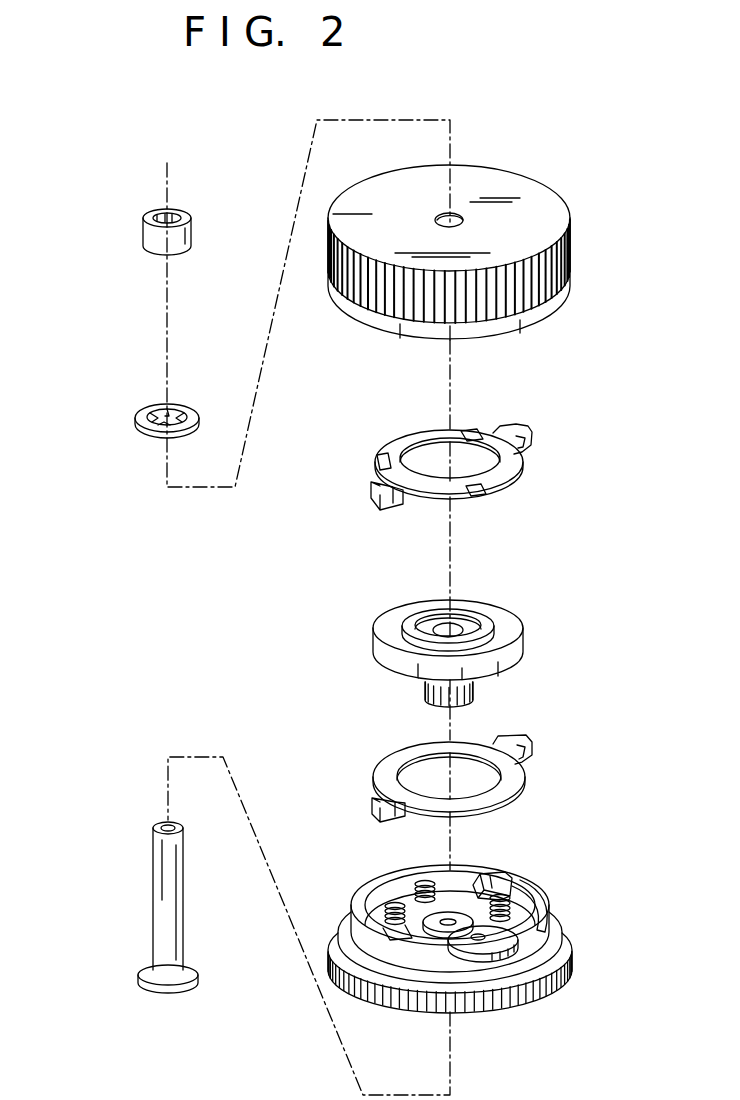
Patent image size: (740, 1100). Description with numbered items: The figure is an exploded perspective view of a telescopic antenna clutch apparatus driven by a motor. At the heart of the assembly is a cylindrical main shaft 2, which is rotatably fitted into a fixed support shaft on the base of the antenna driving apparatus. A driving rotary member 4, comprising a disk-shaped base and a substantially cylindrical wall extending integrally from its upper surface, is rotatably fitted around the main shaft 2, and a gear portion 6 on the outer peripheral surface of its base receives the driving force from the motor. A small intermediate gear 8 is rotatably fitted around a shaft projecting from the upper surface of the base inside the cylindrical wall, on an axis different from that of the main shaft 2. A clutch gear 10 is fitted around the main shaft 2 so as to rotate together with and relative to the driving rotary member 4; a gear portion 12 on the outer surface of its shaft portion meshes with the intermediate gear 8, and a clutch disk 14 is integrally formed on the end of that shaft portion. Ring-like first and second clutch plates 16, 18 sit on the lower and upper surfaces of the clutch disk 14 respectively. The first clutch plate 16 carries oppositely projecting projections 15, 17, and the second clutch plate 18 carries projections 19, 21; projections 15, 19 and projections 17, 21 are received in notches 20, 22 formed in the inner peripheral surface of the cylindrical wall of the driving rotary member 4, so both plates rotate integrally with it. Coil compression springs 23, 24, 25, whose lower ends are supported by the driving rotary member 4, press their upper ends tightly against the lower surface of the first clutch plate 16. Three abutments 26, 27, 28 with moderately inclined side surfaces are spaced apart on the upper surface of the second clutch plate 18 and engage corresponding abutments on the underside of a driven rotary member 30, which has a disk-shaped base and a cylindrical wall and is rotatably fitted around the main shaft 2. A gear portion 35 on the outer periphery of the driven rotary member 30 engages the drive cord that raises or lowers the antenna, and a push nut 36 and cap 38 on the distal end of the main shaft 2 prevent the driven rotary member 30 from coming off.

The main shaft 2 is at (153, 880).
The driving rotary member 4 is at (427, 940).
The gear portion 6 is at (397, 1000).
The intermediate gear 8 is at (500, 960).
The clutch gear 10 is at (443, 650).
The gear portion 12 is at (475, 690).
The clutch disk 14 is at (515, 636).
The projection 15 is at (370, 805).
The first clutch plate 16 is at (438, 772).
The projection 17 is at (522, 745).
The second clutch plate 18 is at (441, 455).
The projection 19 is at (375, 500).
The notch 20 is at (360, 928).
The projection 21 is at (510, 430).
The notch 22 is at (512, 880).
The coil compression spring 23 is at (386, 906).
The coil compression spring 24 is at (424, 883).
The coil compression spring 25 is at (540, 905).
The abutment 26 is at (375, 462).
The abutment 27 is at (480, 497).
The abutment 28 is at (470, 430).
The driven rotary member 30 is at (474, 239).
The gear portion 35 is at (572, 247).
The push nut 36 is at (135, 418).
The cap 38 is at (143, 236).